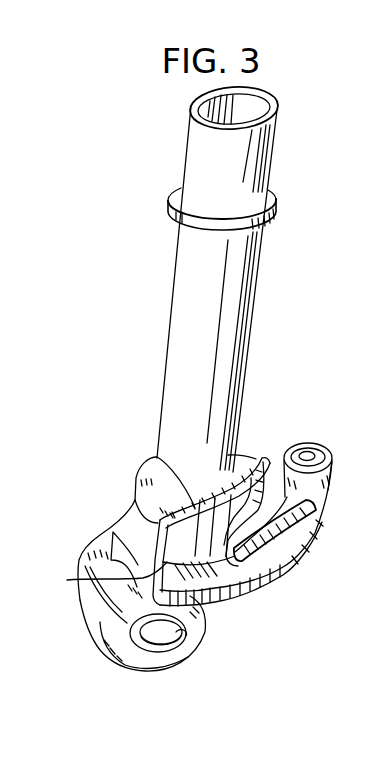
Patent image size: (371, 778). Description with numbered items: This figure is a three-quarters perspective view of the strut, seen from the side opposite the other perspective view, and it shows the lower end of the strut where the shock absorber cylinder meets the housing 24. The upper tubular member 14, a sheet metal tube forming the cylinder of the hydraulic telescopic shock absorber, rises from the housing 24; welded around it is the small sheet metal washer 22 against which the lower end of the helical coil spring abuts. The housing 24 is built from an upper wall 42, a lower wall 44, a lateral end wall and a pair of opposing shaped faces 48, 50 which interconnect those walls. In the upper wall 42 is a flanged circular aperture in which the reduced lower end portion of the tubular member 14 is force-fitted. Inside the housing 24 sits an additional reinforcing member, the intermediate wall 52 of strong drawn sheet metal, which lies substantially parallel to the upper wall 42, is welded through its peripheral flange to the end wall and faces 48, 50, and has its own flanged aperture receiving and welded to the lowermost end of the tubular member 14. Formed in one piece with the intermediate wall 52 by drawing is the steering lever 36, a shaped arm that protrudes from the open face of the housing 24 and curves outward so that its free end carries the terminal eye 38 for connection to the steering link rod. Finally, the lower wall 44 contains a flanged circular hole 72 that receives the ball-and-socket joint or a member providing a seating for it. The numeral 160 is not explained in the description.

The upper tubular member 14 is at (254, 318).
The sheet metal washer 22 is at (178, 200).
The housing 24 is at (91, 540).
The steering lever 36 is at (298, 546).
The terminal eye 38 is at (302, 450).
The upper wall 42 is at (262, 472).
The lower wall 44 is at (148, 661).
The shaped face 48 is at (78, 579).
The shaped face 50 is at (268, 487).
The intermediate wall 52 is at (232, 565).
The flanged circular hole 72 is at (197, 639).
The arcuate slot 160 is at (253, 561).